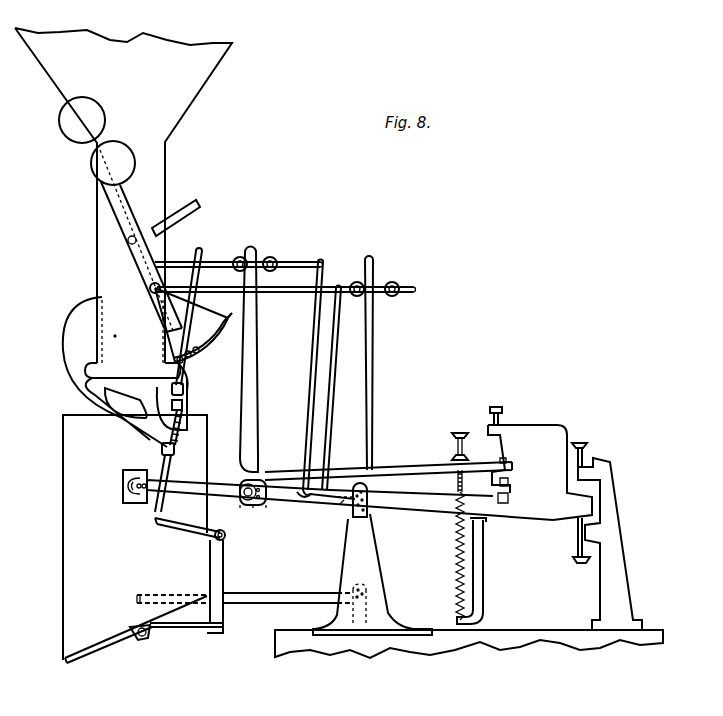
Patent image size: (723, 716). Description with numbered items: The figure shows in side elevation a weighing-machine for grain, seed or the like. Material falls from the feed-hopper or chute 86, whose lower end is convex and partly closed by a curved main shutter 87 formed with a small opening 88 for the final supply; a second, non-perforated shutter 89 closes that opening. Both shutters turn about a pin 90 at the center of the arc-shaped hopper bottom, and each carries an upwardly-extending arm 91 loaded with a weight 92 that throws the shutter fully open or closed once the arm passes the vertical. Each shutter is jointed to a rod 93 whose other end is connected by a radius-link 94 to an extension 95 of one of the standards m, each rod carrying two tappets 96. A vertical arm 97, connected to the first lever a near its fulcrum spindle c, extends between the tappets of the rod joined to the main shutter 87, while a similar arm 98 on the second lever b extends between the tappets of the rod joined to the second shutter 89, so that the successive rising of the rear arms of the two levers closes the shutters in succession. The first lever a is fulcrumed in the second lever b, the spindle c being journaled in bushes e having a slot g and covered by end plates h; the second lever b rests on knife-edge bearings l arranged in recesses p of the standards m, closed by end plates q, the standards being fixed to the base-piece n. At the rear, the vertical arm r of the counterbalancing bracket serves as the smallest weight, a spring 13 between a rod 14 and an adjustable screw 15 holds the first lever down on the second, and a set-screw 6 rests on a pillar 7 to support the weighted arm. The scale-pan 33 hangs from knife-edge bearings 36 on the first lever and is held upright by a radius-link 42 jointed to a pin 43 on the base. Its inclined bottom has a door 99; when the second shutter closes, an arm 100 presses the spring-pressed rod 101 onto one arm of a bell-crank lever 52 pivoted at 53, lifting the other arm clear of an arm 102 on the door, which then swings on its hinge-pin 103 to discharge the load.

The feed-hopper or chute 86 is at (123, 203).
The weight 92 is at (97, 141).
The upwardly-extending arm 91 is at (125, 190).
The pin 90 is at (131, 244).
The arm 100 is at (193, 205).
The rod 93 is at (205, 262).
The tappets 96 is at (273, 262).
The vertical arm 97 is at (248, 382).
The radius-link 94 is at (325, 405).
The arm 98 is at (363, 398).
The main shutter 87 is at (195, 322).
The small opening 88 is at (202, 353).
The second shutter 89 is at (187, 357).
The spring-pressed rod 101 is at (172, 450).
The knife-edge bearings 36 is at (123, 493).
The scale-pan 33 is at (135, 537).
The bell-crank lever 52 is at (217, 565).
The radius-link 42 is at (258, 594).
The pin 43 is at (360, 590).
The pivot 53 is at (236, 514).
The extension 95 is at (310, 510).
The vertically-adjustable screw 15 is at (452, 450).
The set-screw 6 is at (575, 543).
The pillar 7 is at (610, 544).
The spring 13 is at (457, 563).
The rod 14 is at (482, 562).
The door 99 is at (136, 632).
The hinge-pin 103 is at (152, 640).
The arm 102 is at (186, 637).
The first lever a is at (384, 470).
The second lever b is at (350, 500).
The spindle c is at (237, 488).
The bushes e is at (253, 484).
The slot or groove g is at (257, 514).
The end plates h is at (273, 513).
The recesses p is at (340, 495).
The bearings l is at (340, 513).
The end plates q is at (367, 500).
The standards m is at (372, 574).
The vertical arm of bracket r is at (540, 463).
The base-piece n is at (469, 644).